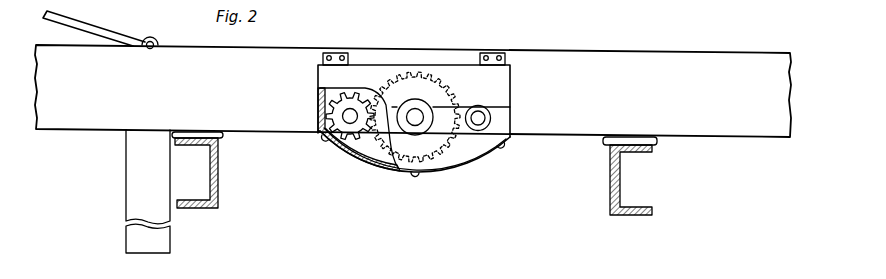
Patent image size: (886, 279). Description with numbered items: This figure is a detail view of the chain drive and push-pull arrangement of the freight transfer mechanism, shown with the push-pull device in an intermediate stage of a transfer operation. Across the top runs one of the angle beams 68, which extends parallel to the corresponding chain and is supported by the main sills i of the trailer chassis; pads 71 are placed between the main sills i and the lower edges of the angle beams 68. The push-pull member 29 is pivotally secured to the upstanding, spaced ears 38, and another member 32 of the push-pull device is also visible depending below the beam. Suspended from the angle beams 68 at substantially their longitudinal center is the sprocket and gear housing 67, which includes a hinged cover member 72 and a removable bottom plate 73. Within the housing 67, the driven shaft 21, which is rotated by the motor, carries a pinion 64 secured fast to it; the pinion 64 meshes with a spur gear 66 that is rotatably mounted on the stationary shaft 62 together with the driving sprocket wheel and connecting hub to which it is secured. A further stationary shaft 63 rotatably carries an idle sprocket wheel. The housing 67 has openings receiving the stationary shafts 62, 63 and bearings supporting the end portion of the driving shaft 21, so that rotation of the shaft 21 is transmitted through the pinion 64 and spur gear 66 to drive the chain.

The driven shaft 21 is at (345, 117).
The push-pull member 29 is at (88, 26).
The member of push-pull device 32 is at (127, 228).
The upstanding spaced ears 38 is at (157, 36).
The stationary shaft 62 is at (415, 114).
The stationary shaft 63 is at (487, 117).
The pinion 64 is at (345, 142).
The spur gear 66 is at (388, 153).
The housing 67 is at (505, 90).
The angle beams 68 is at (590, 62).
The pads 71 is at (202, 133).
The hinged cover member 72 is at (328, 72).
The removable bottom plate 73 is at (452, 169).
The main sills i is at (218, 180).